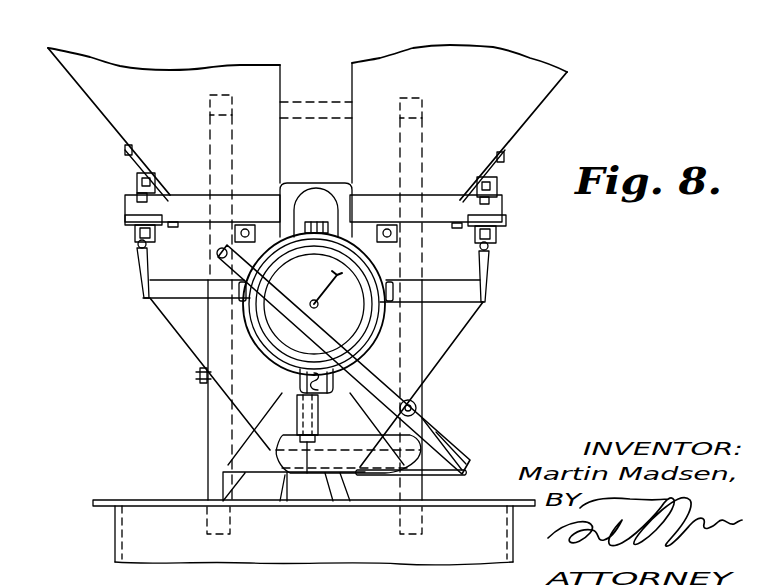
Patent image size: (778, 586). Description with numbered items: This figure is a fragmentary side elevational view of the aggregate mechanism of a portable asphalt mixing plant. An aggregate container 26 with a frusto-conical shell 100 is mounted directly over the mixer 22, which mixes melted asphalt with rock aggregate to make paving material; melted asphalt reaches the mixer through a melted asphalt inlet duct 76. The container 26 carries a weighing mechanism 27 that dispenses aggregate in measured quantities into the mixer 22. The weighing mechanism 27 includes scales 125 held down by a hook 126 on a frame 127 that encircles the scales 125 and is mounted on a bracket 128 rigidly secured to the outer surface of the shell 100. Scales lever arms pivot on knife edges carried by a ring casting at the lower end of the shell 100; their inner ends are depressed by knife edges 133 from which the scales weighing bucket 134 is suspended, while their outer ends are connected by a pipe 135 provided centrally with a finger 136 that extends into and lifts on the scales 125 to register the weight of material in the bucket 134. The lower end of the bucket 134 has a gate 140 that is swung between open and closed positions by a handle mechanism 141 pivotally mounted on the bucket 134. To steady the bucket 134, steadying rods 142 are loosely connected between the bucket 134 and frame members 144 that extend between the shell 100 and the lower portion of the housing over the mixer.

The mixer 22 is at (151, 531).
The aggregate container 26 is at (508, 100).
The weighing mechanism 27 is at (438, 320).
The melted asphalt inlet duct 76 is at (247, 487).
The frusto-conical shell 100 is at (122, 123).
The scales 125 is at (262, 318).
The hook 126 is at (300, 381).
The frame 127 is at (298, 365).
The bracket 128 is at (342, 88).
The knife edges 133 is at (125, 224).
The scales weighing bucket 134 is at (442, 357).
The pipe 135 is at (240, 205).
The finger 136 is at (323, 215).
The gate 140 is at (342, 474).
The handle mechanism 141 is at (219, 255).
The steadying rods 142 is at (198, 376).
The frame members 144 is at (215, 445).